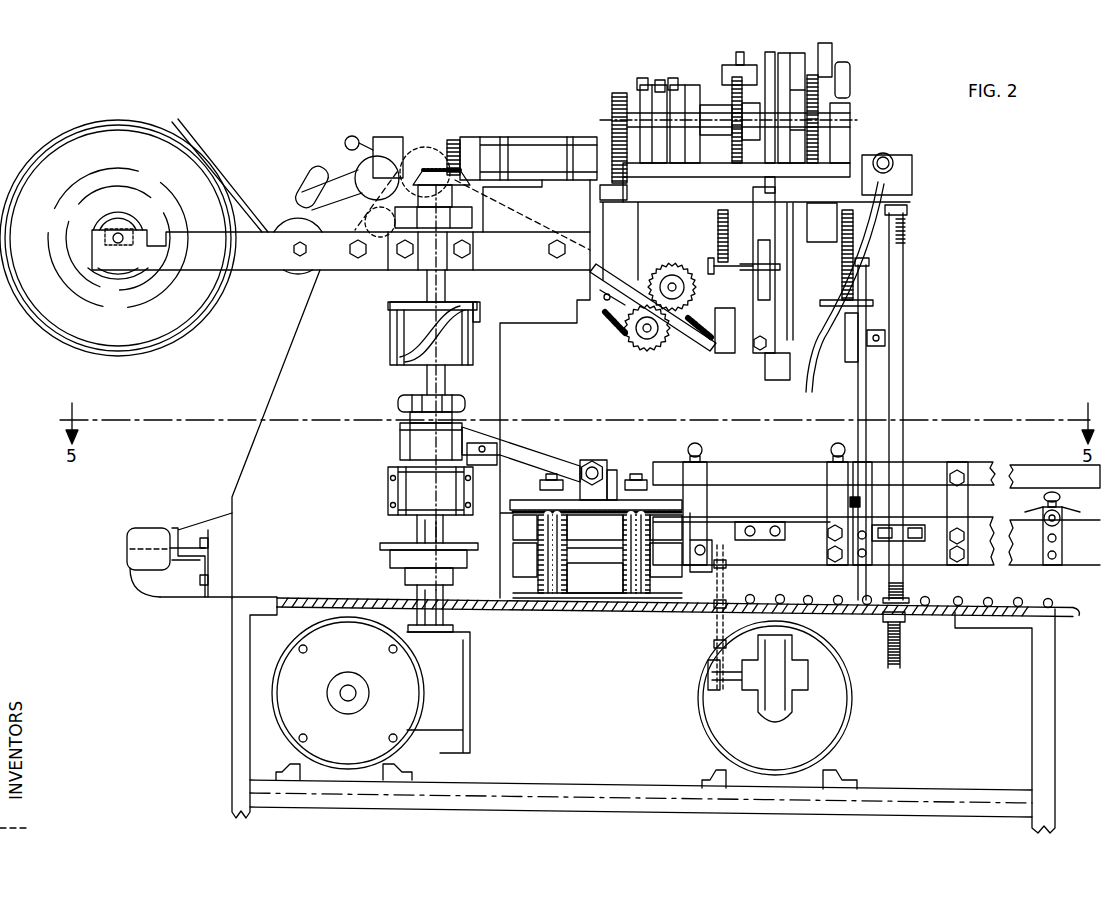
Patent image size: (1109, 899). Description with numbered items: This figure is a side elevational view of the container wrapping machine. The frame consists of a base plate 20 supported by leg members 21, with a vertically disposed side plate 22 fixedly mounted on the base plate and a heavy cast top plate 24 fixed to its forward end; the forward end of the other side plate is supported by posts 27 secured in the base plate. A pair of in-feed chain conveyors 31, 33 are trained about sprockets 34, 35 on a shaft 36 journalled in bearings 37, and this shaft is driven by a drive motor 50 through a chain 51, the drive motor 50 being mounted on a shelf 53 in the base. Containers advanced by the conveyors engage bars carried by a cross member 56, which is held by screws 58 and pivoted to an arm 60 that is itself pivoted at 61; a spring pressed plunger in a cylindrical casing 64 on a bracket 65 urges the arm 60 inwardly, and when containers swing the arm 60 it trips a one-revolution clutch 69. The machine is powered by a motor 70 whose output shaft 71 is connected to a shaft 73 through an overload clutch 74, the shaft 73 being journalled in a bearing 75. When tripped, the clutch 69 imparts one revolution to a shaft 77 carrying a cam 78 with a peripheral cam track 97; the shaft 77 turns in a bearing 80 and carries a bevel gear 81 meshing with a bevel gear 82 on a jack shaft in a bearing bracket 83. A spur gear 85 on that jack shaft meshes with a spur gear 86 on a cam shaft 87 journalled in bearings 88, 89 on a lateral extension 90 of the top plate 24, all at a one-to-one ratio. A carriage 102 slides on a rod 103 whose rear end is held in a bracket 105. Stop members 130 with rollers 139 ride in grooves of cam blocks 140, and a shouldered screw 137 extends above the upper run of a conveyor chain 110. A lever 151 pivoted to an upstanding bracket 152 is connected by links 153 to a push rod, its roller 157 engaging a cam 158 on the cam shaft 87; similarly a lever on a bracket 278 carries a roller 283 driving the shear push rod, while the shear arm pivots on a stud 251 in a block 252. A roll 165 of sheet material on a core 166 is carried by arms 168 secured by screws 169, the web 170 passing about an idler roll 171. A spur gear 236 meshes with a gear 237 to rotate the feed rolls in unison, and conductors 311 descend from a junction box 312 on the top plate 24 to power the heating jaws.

The base plate 20 is at (334, 598).
The leg members 21 is at (238, 653).
The side plate 22 is at (329, 398).
The top plate 24 is at (710, 198).
The posts 27 is at (905, 398).
The in-feed chain conveyor 31 is at (562, 598).
The in-feed chain conveyor 33 is at (640, 598).
The sprocket 34 is at (564, 566).
The sprocket 35 is at (610, 540).
The shaft 36 is at (606, 563).
The bearings 37 is at (534, 564).
The drive motor 50 is at (784, 684).
The chain 51 is at (714, 612).
The shelf 53 is at (868, 790).
The cross member 56 is at (615, 469).
The screws 58 is at (552, 473).
The arm 60 is at (525, 452).
The pivot 61 is at (484, 466).
The cylindrical casing 64 is at (592, 459).
The bracket 65 is at (545, 498).
The one-revolution clutch 69 is at (438, 451).
The motor 70 is at (359, 665).
The output shaft 71 is at (445, 615).
The shaft 73 is at (424, 526).
The overload clutch 74 is at (430, 570).
The bearing 75 is at (438, 503).
The shaft 77 is at (427, 283).
The cam 78 is at (462, 356).
The bearing 80 is at (444, 227).
The bevel gear 81 is at (440, 166).
The bevel gear 82 is at (455, 142).
The bearing bracket 83 is at (540, 176).
The spur gear 85 is at (628, 181).
The spur gear 86 is at (612, 102).
The cam shaft 87 is at (638, 90).
The bearing 88 is at (850, 110).
The bearing 89 is at (685, 95).
The lateral extension 90 is at (792, 170).
The cam track 97 is at (400, 345).
The carriage 102 is at (213, 522).
The rod 103 is at (172, 530).
The bracket 105 is at (162, 597).
The conveyor chain 110 is at (764, 521).
The stop members 130 is at (857, 406).
The shouldered screw 137 is at (862, 501).
The rollers 139 is at (887, 338).
The cam blocks 140 is at (847, 360).
The lever 151 is at (829, 46).
The bracket 152 is at (850, 70).
The links 153 is at (790, 44).
The roller 157 is at (820, 84).
The cam 158 is at (815, 128).
The roll 165 is at (124, 336).
The core 166 is at (136, 222).
The arms 168 is at (232, 260).
The screws 169 is at (356, 260).
The web 170 is at (244, 212).
The idler roll 171 is at (293, 224).
The spur gear 236 is at (664, 264).
The gear 237 is at (641, 352).
The stud 251 is at (703, 312).
The block 252 is at (725, 355).
The bracket 278 is at (730, 100).
The roller 283 is at (740, 64).
The conductors 311 is at (872, 223).
The junction box 312 is at (912, 182).